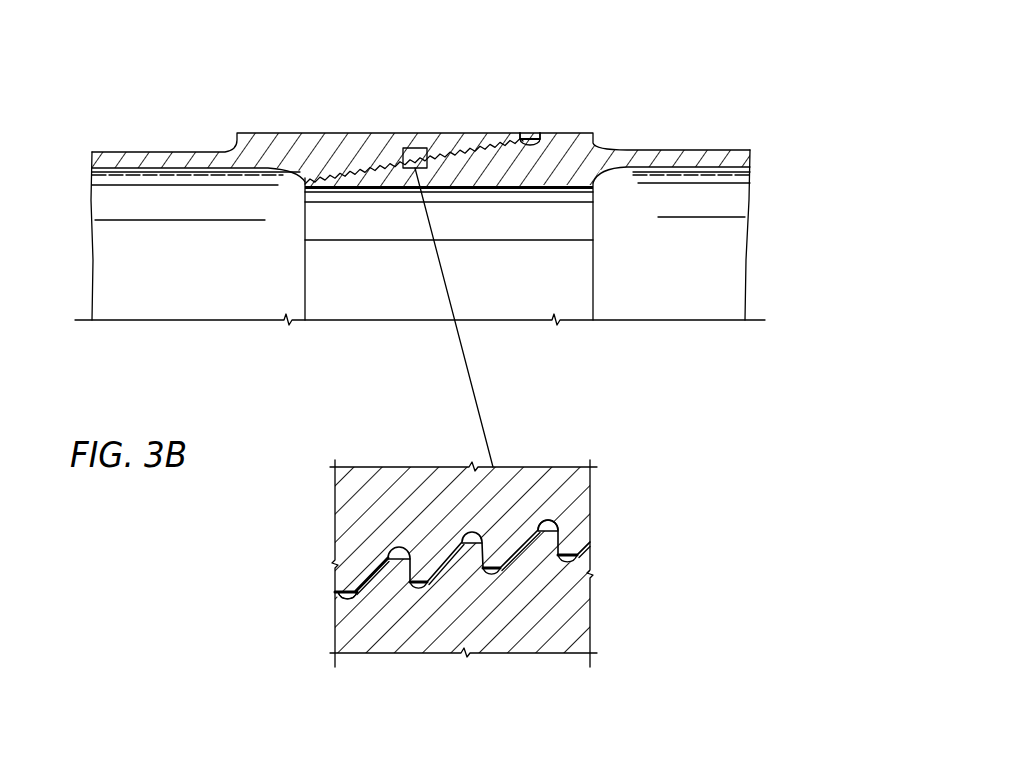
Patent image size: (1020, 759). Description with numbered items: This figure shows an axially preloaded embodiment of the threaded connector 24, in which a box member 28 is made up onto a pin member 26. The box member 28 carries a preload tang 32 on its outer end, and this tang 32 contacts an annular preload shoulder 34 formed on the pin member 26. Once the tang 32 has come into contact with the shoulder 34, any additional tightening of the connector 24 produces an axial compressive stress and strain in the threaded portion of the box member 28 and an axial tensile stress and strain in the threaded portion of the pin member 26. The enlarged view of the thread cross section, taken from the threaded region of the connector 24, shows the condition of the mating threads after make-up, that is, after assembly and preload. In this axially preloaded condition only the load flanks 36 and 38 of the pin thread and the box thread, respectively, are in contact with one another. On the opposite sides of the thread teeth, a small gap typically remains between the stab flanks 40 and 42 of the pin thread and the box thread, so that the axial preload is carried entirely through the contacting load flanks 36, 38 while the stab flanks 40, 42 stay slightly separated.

The connector 24 is at (490, 97).
The pin member 26 is at (548, 175).
The box member 28 is at (326, 147).
The preload tang 32 is at (526, 136).
The annular preload shoulder 34 is at (536, 136).
The load flank 36 is at (557, 548).
The load flank 38 is at (553, 530).
The stab flank 40 is at (370, 578).
The stab flank 42 is at (375, 583).